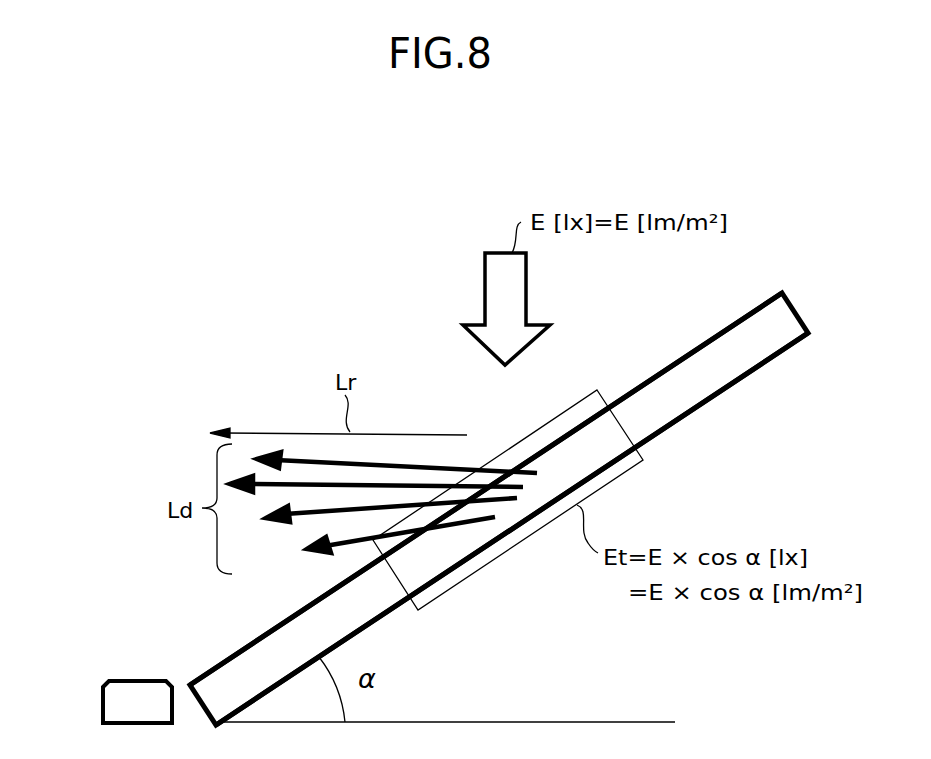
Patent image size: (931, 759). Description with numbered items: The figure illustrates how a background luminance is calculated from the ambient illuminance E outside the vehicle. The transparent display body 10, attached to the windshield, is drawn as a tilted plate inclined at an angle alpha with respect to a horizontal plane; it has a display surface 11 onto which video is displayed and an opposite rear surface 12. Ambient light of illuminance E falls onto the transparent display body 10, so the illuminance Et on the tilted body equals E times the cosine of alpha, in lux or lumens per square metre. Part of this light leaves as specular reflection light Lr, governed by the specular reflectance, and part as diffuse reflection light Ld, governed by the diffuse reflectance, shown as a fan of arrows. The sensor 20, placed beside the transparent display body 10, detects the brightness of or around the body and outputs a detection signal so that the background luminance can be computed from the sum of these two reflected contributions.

The transparent display body 10 is at (678, 382).
The display surface 11 is at (753, 367).
The rear surface 12 is at (730, 325).
The sensor 20 is at (102, 700).